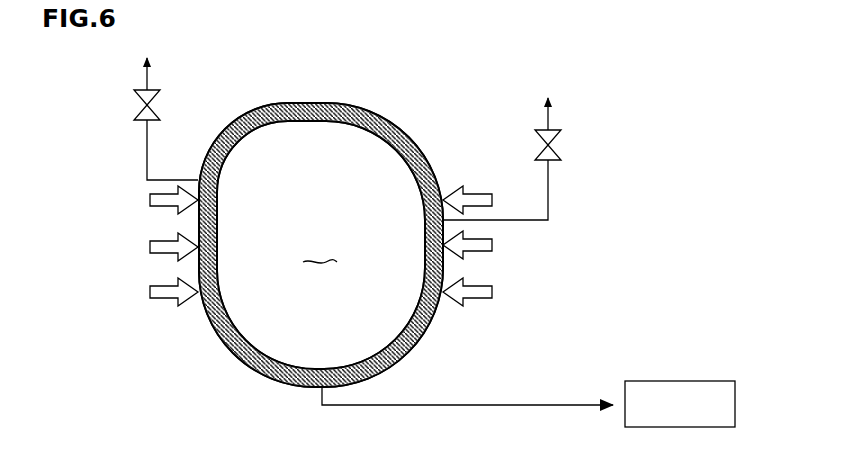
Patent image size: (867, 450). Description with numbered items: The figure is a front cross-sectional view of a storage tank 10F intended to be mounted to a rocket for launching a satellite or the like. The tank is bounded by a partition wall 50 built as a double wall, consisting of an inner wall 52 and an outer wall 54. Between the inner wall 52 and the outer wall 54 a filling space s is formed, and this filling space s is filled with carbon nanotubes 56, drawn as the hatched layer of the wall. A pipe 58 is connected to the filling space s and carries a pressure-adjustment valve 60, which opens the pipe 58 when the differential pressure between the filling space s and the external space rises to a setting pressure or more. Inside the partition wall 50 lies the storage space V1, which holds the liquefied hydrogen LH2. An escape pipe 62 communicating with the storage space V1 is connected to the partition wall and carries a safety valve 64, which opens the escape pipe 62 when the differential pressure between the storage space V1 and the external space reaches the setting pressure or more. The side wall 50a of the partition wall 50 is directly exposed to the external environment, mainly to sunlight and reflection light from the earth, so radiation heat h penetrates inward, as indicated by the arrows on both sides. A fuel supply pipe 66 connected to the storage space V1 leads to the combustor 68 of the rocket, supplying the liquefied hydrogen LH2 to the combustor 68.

The storage tank 10F is at (388, 96).
The partition wall 50 is at (295, 222).
The side wall 50a is at (198, 231).
The inner wall 52 is at (356, 120).
The outer wall 54 is at (398, 116).
The carbon nanotubes 56 is at (432, 146).
The pipe 58 is at (550, 175).
The pressure-adjustment valve 60 is at (557, 143).
The escape pipe 62 is at (145, 162).
The safety valve 64 is at (135, 105).
The fuel supply pipe 66 is at (518, 404).
The combustor 68 is at (673, 381).
The radiation heat h is at (486, 233).
The liquefied hydrogen LH2 is at (320, 250).
The storage space V1 is at (253, 325).
The filling space s is at (256, 370).